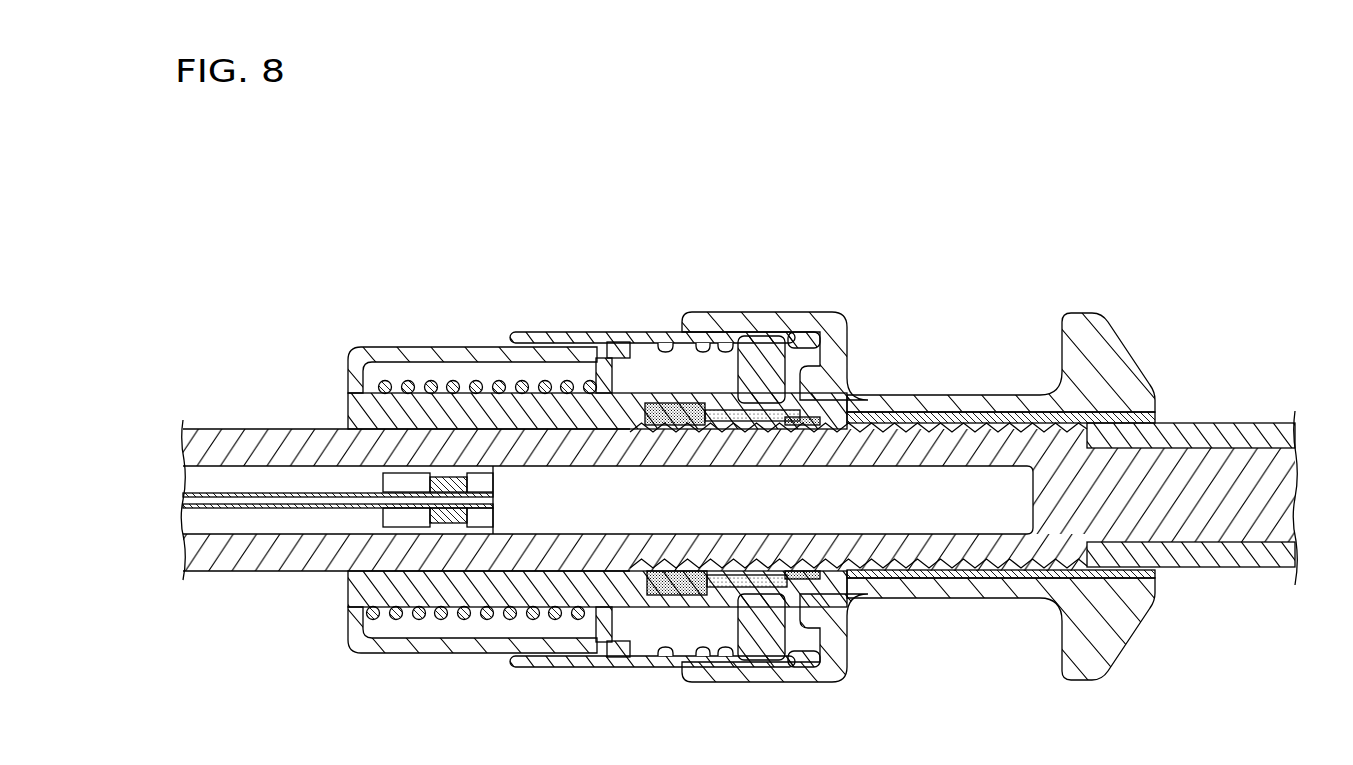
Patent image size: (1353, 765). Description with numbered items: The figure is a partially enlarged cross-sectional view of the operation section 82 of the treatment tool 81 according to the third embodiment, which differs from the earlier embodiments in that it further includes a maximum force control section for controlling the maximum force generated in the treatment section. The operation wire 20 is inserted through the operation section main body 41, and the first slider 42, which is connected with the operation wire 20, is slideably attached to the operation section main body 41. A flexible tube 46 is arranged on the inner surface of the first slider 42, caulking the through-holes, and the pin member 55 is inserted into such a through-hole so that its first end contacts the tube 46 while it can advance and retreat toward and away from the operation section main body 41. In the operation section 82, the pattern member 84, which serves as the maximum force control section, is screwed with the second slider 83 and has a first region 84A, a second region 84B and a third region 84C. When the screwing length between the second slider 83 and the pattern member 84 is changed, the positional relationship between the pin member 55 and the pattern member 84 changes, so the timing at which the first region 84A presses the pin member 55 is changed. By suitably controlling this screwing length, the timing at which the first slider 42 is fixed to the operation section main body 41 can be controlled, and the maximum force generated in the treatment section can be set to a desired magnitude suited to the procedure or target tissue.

The treatment tool 81 is at (1046, 204).
The operation section 82 is at (797, 268).
The second slider 83 is at (950, 394).
The pattern member 84 is at (587, 338).
The first region 84A is at (658, 342).
The second region 84B is at (727, 342).
The third region 84C is at (703, 345).
The pin member 55 is at (770, 655).
The tube 46 is at (793, 587).
The operation section main body 41 is at (1003, 563).
The first slider 42 is at (903, 573).
The operation wire 20 is at (250, 497).